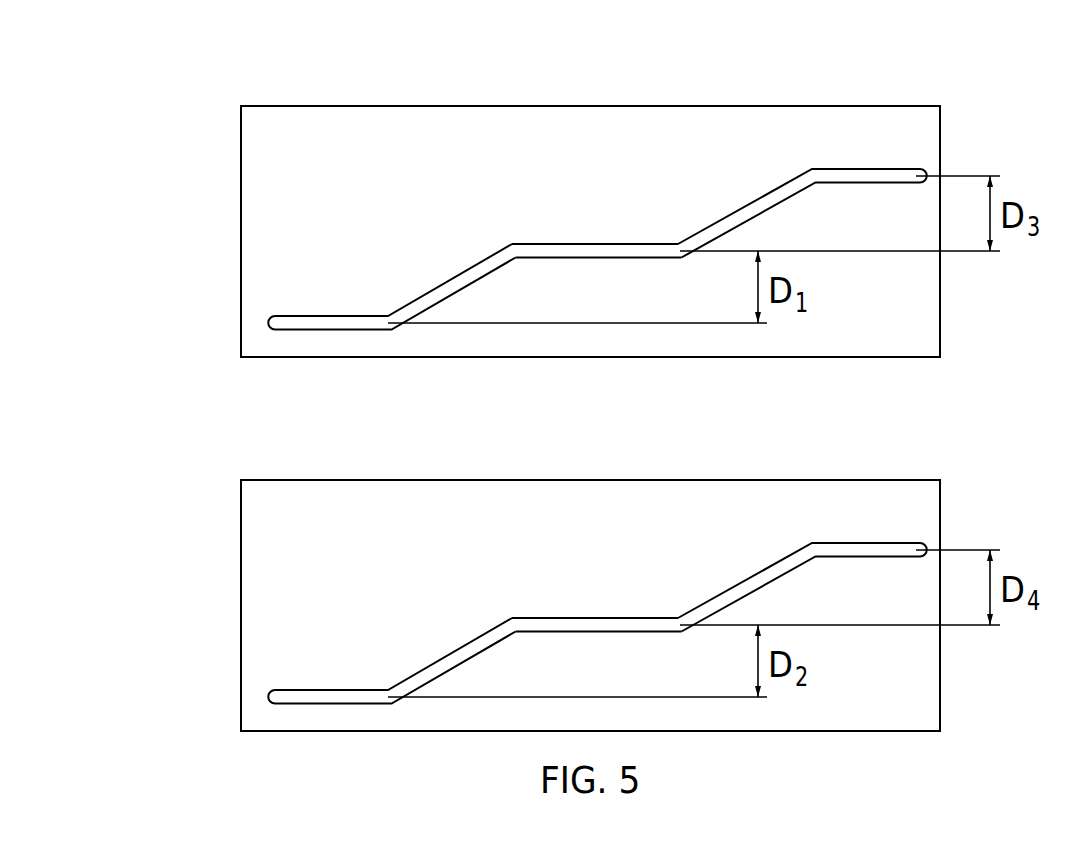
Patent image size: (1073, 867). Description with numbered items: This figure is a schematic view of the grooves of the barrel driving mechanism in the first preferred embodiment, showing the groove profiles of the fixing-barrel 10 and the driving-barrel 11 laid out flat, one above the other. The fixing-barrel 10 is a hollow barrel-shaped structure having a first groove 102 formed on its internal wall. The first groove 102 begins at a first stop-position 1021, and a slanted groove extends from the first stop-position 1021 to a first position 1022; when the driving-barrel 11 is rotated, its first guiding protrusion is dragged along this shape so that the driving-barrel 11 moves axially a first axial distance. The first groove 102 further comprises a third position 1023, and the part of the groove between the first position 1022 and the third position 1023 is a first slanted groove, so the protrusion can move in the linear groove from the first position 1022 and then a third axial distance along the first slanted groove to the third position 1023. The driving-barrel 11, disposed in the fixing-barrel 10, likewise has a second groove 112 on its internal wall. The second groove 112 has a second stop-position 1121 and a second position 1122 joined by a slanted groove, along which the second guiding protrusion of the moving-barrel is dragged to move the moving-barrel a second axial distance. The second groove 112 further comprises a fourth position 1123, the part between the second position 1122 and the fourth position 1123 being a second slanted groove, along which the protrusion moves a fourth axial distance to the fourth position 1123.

The fixing-barrel 10 is at (200, 208).
The driving-barrel 11 is at (200, 604).
The first groove 102 is at (597, 164).
The first stop-position 1021 is at (327, 323).
The first position 1022 is at (571, 253).
The third position 1023 is at (802, 155).
The second groove 112 is at (597, 535).
The second stop-position 1121 is at (391, 565).
The second position 1122 is at (597, 529).
The fourth position 1123 is at (802, 529).